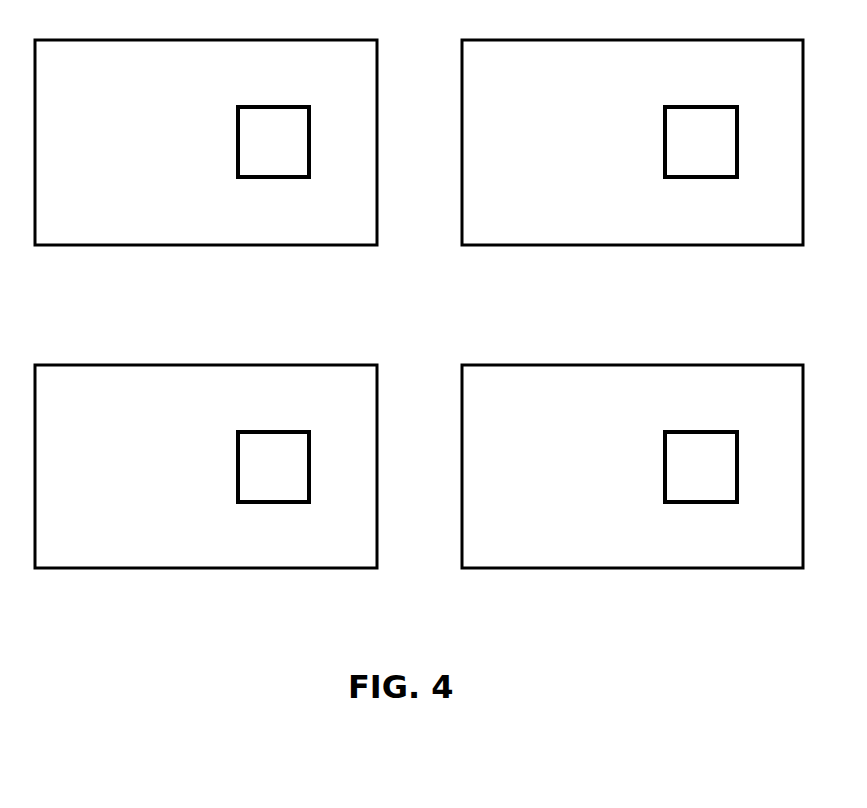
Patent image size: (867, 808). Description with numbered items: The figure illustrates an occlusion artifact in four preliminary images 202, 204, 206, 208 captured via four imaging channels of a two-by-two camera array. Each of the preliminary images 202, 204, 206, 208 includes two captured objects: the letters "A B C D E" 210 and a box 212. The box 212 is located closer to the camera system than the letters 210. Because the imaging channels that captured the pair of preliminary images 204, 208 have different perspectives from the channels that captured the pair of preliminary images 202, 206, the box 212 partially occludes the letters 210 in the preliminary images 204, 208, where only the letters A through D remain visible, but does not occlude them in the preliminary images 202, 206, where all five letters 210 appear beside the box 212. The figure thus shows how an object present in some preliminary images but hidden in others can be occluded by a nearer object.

The preliminary image 202 is at (92, 72).
The preliminary image 204 is at (519, 72).
The preliminary image 206 is at (92, 396).
The preliminary image 208 is at (519, 396).
The letters 210 is at (85, 155).
The box 212 is at (230, 177).